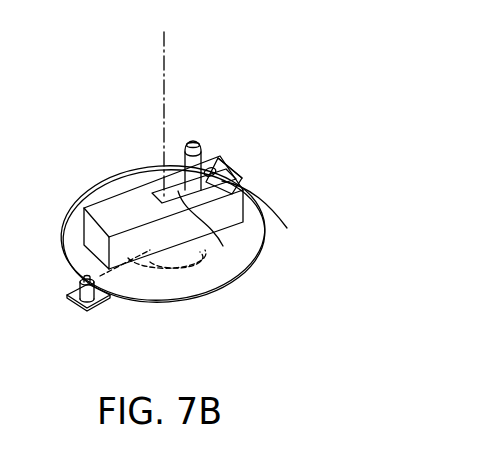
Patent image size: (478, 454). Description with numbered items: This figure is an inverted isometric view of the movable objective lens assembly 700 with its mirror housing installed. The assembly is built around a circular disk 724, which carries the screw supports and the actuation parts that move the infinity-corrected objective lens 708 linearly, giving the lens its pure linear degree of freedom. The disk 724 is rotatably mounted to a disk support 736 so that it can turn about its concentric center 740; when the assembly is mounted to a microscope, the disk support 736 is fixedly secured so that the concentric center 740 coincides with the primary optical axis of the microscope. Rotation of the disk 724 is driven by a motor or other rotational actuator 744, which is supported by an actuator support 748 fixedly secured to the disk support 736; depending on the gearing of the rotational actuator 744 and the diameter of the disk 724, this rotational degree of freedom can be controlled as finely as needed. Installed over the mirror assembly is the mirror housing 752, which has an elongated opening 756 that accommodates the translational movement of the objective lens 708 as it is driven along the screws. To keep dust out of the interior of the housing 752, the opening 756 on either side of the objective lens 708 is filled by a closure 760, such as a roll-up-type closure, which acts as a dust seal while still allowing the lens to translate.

The movable objective lens assembly 700 is at (259, 123).
The infinity-corrected objective lens 708 is at (193, 158).
The circular disk 724 is at (241, 264).
The disk support 736 is at (195, 247).
The concentric center 740 is at (168, 47).
The rotational actuator 744 is at (66, 298).
The actuator support 748 is at (90, 311).
The mirror housing 752 is at (237, 179).
The elongated opening 756 is at (214, 170).
The closure 760 is at (238, 225).